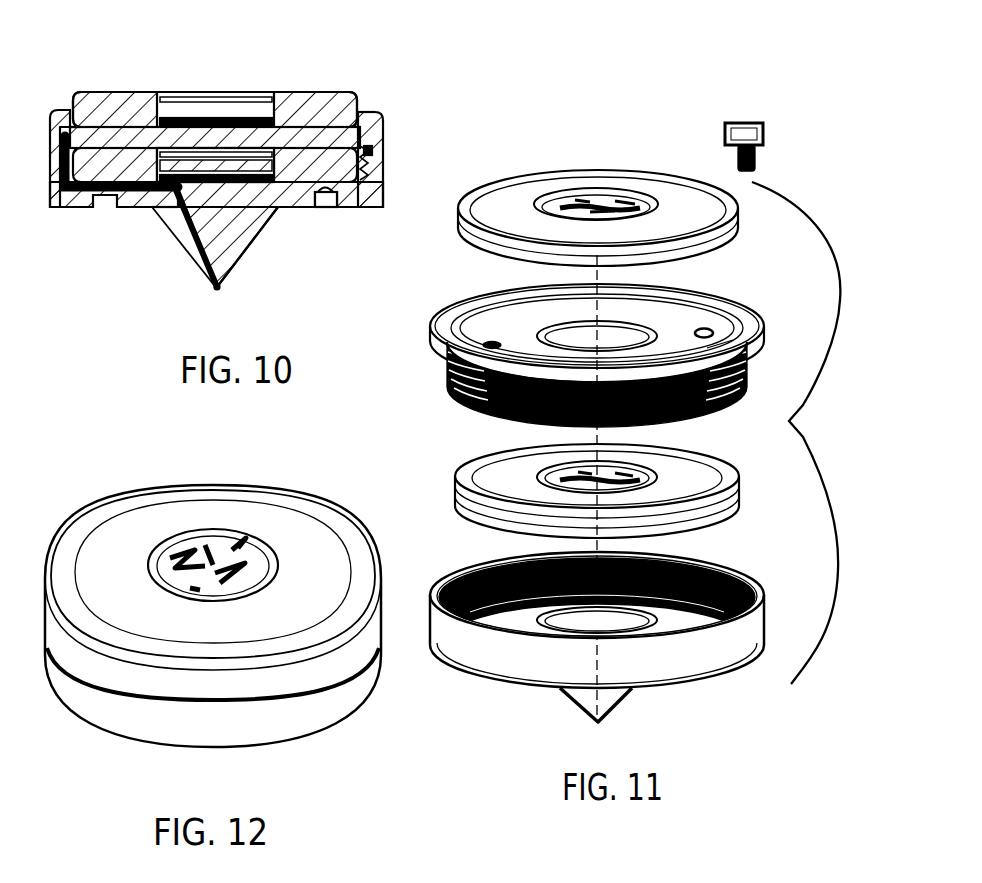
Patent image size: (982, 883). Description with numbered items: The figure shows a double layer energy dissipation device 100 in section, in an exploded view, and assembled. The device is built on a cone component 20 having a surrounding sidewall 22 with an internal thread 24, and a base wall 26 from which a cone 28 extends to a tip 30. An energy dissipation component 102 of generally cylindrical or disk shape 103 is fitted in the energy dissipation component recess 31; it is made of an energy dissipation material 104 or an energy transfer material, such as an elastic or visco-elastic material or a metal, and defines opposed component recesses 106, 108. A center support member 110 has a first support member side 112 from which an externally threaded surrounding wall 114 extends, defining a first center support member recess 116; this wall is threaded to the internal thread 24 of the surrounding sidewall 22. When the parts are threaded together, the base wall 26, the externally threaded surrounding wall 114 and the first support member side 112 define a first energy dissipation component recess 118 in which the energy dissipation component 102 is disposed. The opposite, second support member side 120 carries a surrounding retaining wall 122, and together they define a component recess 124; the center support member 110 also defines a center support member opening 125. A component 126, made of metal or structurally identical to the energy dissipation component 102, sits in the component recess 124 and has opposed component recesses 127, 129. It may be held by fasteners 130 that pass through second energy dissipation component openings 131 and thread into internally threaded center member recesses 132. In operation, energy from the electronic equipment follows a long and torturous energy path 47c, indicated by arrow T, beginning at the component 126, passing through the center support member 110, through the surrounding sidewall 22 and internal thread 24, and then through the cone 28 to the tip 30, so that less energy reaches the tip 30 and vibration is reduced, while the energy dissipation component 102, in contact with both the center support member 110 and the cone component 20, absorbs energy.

In FIG. 10, the cone component 20 is at (192, 262).
In FIG. 11, the cone component 20 is at (577, 642).
In FIG. 12, the cone component 20 is at (332, 718).
In FIG. 10, the surrounding sidewall 22 is at (65, 208).
In FIG. 11, the surrounding sidewall 22 is at (430, 645).
In FIG. 10, the internal thread 24 is at (63, 130).
In FIG. 11, the internal thread 24 is at (462, 580).
In FIG. 10, the base wall 26 is at (216, 266).
In FIG. 11, the base wall 26 is at (502, 608).
In FIG. 10, the cone 28 is at (181, 248).
In FIG. 10, the tip 30 is at (216, 288).
In FIG. 11, the tip 30 is at (602, 725).
In FIG. 11, the energy dissipation component recess 31 is at (682, 605).
In FIG. 10, the energy path 47c is at (165, 213).
In FIG. 10, the arrow T is at (214, 284).
In FIG. 10, the double layer energy dissipation device 100 is at (343, 92).
In FIG. 11, the double layer energy dissipation device 100 is at (800, 433).
In FIG. 12, the double layer energy dissipation device 100 is at (323, 510).
In FIG. 10, the energy dissipation component 102 is at (370, 163).
In FIG. 11, the energy dissipation component 102 is at (592, 494).
In FIG. 11, the generally cylindrical shape 103 is at (722, 505).
In FIG. 10, the energy dissipation material 104 is at (372, 172).
In FIG. 11, the energy dissipation material 104 is at (460, 500).
In FIG. 10, the component recess 106 is at (270, 210).
In FIG. 11, the component recess 106 is at (657, 482).
In FIG. 10, the component recess 108 is at (187, 147).
In FIG. 11, the component recess 108 is at (700, 530).
In FIG. 10, the center support member 110 is at (386, 125).
In FIG. 11, the center support member 110 is at (435, 342).
In FIG. 12, the center support member 110 is at (263, 702).
In FIG. 10, the first support member side 112 is at (297, 147).
In FIG. 10, the externally threaded surrounding wall 114 is at (372, 162).
In FIG. 11, the externally threaded surrounding wall 114 is at (443, 380).
In FIG. 10, the first center support member recess 116 is at (377, 208).
In FIG. 11, the first center support member recess 116 is at (450, 400).
In FIG. 10, the first energy dissipation component recess 118 is at (328, 208).
In FIG. 10, the second support member side 120 is at (112, 125).
In FIG. 11, the second support member side 120 is at (594, 329).
In FIG. 10, the surrounding retaining wall 122 is at (75, 110).
In FIG. 11, the surrounding retaining wall 122 is at (678, 288).
In FIG. 10, the component recess 124 is at (372, 112).
In FIG. 11, the component recess 124 is at (733, 340).
In FIG. 11, the center support member opening 125 is at (547, 333).
In FIG. 10, the component 126 is at (148, 92).
In FIG. 11, the component 126 is at (643, 170).
In FIG. 12, the component 126 is at (127, 508).
In FIG. 10, the component recess 127 is at (205, 110).
In FIG. 11, the component recess 127 is at (593, 200).
In FIG. 10, the component recess 129 is at (235, 113).
In FIG. 11, the component recess 129 is at (485, 250).
In FIG. 11, the fastener 130 is at (765, 132).
In FIG. 11, the second energy dissipation component opening 131 is at (598, 196).
In FIG. 11, the internally threaded center member recess 132 is at (717, 332).